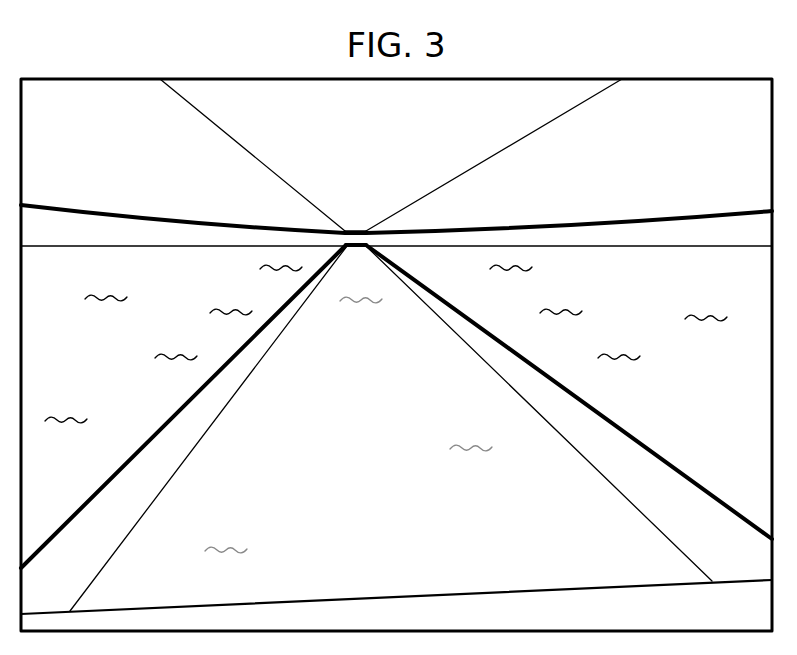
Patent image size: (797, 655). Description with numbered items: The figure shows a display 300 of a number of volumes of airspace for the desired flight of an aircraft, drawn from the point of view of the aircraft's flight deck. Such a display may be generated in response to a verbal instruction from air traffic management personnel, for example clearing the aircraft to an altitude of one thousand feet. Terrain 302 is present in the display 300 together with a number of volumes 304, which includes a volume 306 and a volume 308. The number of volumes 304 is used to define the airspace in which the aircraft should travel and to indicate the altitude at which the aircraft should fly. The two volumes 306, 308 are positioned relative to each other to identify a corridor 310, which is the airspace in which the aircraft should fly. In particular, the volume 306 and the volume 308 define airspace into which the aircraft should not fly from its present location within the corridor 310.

The display 300 is at (601, 72).
The terrain 302 is at (72, 352).
The number of volumes 304 is at (694, 416).
The volume 306 is at (392, 606).
The volume 308 is at (194, 215).
The corridor 310 is at (620, 282).